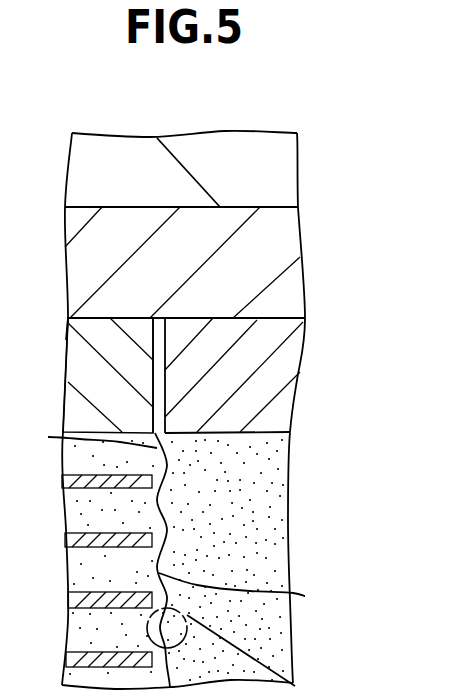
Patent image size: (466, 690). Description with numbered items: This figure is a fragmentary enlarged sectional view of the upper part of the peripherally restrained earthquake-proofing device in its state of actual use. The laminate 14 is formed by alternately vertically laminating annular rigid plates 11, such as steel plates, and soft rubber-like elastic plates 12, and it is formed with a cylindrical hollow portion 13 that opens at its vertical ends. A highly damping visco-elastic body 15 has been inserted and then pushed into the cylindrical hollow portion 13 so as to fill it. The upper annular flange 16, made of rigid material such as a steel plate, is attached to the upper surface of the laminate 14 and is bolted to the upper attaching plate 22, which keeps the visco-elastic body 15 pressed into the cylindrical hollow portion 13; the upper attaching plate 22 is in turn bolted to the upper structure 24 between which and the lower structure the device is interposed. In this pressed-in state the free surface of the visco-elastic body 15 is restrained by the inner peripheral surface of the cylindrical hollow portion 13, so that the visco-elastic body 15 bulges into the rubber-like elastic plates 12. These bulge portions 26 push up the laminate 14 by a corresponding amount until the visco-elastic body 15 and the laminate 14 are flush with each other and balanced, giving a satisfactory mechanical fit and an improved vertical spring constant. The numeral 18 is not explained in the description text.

The annular rigid plates 11 is at (67, 587).
The rubber-like elastic plates 12 is at (67, 510).
The cylindrical hollow portion 13 is at (165, 350).
The laminate 14 is at (69, 335).
The visco-elastic body 15 is at (307, 320).
The upper annular flange 16 is at (72, 387).
The second region 18 is at (287, 365).
The upper attaching plate 22 is at (284, 236).
The upper structure 24 is at (237, 143).
The bulge portions 26 is at (176, 522).